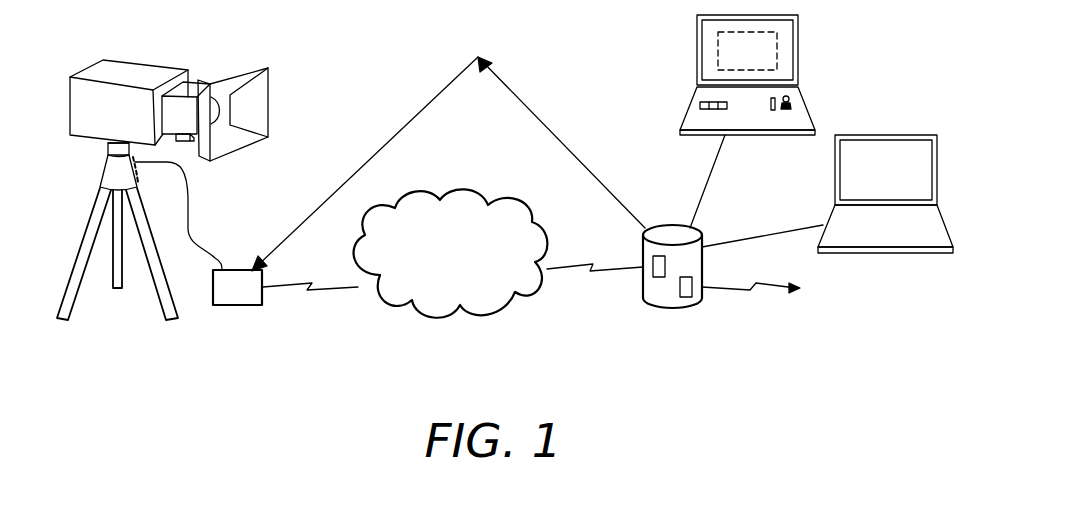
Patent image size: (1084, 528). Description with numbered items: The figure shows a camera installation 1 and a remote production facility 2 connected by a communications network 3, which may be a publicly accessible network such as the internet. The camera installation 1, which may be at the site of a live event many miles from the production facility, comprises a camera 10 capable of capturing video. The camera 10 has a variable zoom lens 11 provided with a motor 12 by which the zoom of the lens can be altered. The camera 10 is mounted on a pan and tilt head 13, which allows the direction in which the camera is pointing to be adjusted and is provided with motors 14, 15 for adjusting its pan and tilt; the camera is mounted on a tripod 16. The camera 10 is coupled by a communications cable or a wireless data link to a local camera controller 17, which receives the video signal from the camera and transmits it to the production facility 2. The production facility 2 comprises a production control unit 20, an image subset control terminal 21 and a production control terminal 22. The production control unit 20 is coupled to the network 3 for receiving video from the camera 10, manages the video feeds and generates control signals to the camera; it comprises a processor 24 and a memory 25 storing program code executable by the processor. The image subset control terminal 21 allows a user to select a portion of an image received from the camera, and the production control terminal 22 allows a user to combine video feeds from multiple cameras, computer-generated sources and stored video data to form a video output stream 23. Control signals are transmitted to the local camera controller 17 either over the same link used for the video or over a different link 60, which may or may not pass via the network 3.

The camera installation 1 is at (156, 360).
The camera 10 is at (127, 68).
The variable zoom lens 11 is at (195, 88).
The motor 12 is at (185, 143).
The pan and tilt head 13 is at (110, 175).
The motor 14 is at (132, 156).
The motor 15 is at (141, 180).
The tripod 16 is at (157, 302).
The local camera controller 17 is at (240, 307).
The link 60 is at (398, 127).
The communications network 3 is at (463, 322).
The production facility 2 is at (675, 322).
The production control unit 20 is at (668, 226).
The processor 24 is at (653, 272).
The memory 25 is at (703, 279).
The video output stream 23 is at (780, 295).
The image subset control terminal 21 is at (808, 33).
The production control terminal 22 is at (930, 255).